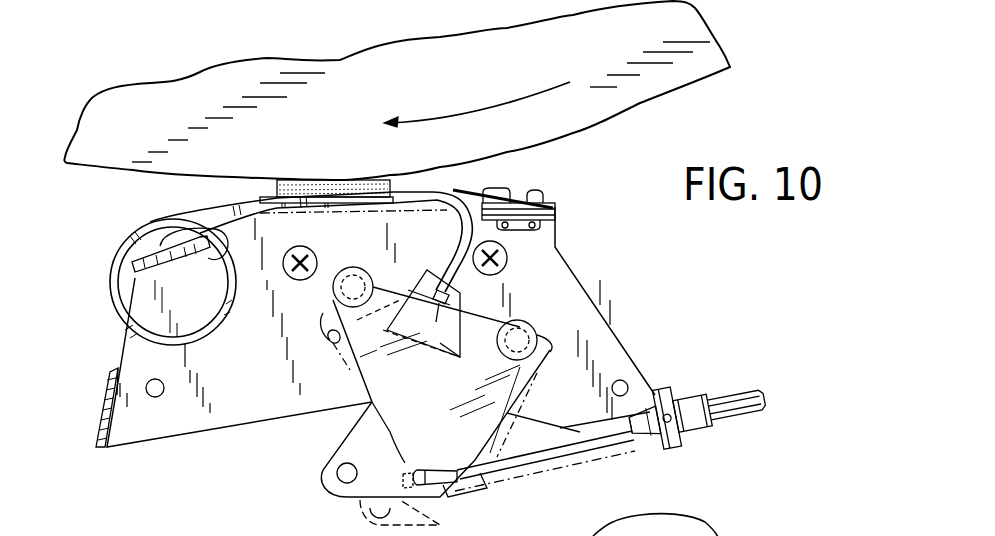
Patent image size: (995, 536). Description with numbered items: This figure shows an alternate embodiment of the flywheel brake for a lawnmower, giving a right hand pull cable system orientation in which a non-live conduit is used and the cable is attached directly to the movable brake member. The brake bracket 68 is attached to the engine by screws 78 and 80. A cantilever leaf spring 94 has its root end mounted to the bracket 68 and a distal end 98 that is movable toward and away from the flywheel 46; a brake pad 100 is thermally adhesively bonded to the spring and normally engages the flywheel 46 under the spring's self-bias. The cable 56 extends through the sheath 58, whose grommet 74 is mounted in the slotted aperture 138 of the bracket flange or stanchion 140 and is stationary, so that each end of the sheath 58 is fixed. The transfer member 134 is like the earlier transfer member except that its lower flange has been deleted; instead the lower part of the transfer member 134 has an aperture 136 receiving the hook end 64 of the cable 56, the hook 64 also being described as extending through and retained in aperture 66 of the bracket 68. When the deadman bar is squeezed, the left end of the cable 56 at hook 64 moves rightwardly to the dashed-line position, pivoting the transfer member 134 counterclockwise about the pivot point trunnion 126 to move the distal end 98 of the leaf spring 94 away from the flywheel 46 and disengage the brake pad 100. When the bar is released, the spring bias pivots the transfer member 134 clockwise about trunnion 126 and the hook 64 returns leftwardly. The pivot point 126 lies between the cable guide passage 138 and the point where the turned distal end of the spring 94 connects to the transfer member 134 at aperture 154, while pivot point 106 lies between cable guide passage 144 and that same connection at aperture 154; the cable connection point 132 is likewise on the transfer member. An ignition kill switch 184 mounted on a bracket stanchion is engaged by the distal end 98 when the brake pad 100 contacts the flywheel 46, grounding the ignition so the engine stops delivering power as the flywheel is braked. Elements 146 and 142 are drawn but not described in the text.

The flywheel 46 is at (637, 95).
The brake pad 100 is at (356, 180).
The distal end 98 is at (443, 195).
The ignition kill switch 184 is at (557, 202).
The cantilever leaf spring 94 is at (155, 222).
The screw 78 is at (308, 246).
The pivot point 106 is at (352, 270).
The screw 80 is at (510, 250).
The pivot point trunnion 126 is at (525, 328).
The brake bracket 68 is at (598, 326).
The cable connection point 132 is at (627, 381).
The bracket flange or stanchion 140 is at (665, 386).
The slotted aperture 138 is at (698, 398).
The conduit or sheath 58 is at (745, 412).
The grommet 74 is at (693, 433).
The cable 56 is at (550, 440).
The aperture 154 is at (433, 323).
The strip edge 146 is at (112, 376).
The cable guide passage 144 is at (106, 410).
The aperture 66 is at (150, 396).
The transfer member 134 is at (358, 428).
The aperture 136 is at (425, 472).
The hook 64 is at (440, 475).
The hole 142 is at (347, 478).